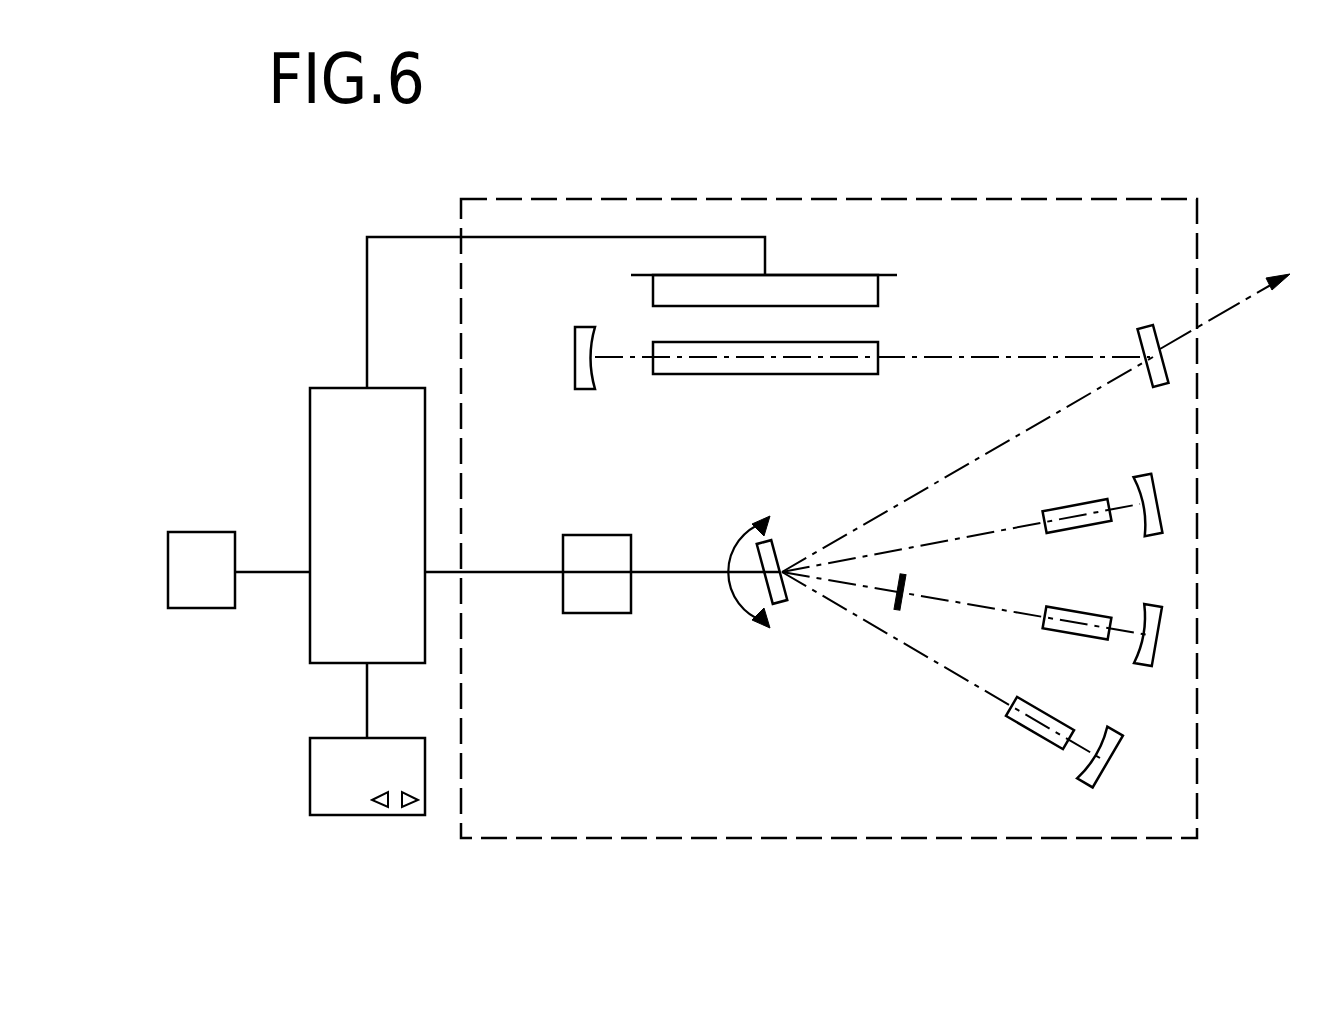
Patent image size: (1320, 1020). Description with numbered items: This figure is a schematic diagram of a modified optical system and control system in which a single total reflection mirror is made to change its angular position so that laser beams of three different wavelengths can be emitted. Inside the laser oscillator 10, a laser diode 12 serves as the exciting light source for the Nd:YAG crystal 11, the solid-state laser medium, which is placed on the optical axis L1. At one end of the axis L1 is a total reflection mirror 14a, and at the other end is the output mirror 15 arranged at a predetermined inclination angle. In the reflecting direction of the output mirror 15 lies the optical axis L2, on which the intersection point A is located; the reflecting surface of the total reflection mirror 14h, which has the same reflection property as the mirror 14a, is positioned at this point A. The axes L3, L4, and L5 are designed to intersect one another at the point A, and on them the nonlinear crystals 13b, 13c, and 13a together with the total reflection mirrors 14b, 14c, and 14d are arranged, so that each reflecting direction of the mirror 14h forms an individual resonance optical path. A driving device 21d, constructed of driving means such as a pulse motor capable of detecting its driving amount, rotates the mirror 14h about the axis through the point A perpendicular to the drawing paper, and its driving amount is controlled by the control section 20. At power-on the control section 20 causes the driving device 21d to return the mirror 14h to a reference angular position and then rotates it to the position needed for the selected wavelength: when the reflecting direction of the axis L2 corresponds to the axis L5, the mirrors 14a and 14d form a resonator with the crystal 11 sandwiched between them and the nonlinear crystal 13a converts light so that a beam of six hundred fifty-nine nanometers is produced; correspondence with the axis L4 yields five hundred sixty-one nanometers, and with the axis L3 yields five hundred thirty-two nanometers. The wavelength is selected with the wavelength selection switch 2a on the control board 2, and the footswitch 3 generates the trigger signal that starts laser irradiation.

The laser oscillator 10 is at (1083, 199).
The laser diode 12 is at (862, 273).
The Nd:YAG crystal 11 is at (865, 341).
The total reflection mirror 14a is at (578, 327).
The output mirror 15 is at (1150, 327).
The total reflection mirror 14h is at (781, 605).
The intersection point A is at (783, 566).
The nonlinear crystal 13a is at (1040, 708).
The nonlinear crystal 13b is at (1068, 506).
The nonlinear crystal 13c is at (1072, 612).
The total reflection mirror 14b is at (1160, 484).
The total reflection mirror 14c is at (1160, 621).
The total reflection mirror 14d is at (1108, 765).
The optical axis L1 is at (1008, 357).
The optical axis L2 is at (1082, 397).
The optical axis L3 is at (1025, 428).
The optical axis L4 is at (975, 615).
The optical axis L5 is at (900, 642).
The control section 20 is at (318, 432).
The driving device 21d is at (597, 535).
The footswitch 3 is at (218, 532).
The control board 2 is at (337, 748).
The wavelength selection switch 2a is at (405, 802).